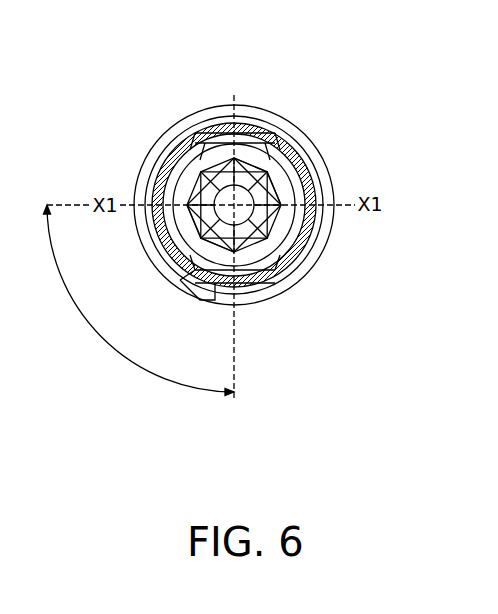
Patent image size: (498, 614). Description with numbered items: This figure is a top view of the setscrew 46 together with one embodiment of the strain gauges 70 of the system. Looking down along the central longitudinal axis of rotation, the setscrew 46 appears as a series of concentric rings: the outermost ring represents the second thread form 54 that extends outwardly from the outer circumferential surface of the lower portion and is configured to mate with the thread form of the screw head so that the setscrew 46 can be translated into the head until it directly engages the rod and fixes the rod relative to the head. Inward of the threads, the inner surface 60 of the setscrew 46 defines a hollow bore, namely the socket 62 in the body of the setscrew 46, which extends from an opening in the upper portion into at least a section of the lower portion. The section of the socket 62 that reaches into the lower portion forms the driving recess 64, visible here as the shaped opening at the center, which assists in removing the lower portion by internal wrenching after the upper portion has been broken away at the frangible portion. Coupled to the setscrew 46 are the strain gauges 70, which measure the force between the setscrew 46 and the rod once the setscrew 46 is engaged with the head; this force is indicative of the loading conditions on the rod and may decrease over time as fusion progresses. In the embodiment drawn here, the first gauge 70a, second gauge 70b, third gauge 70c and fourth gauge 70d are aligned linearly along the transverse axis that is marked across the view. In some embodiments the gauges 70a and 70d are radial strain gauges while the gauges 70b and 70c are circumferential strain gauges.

The setscrew 46 is at (367, 117).
The second thread form 54 is at (170, 157).
The inner surface 60 is at (242, 135).
The socket 62 is at (270, 263).
The driving recess 64 is at (218, 170).
The strain gauges 70 is at (277, 222).
The first gauge 70a is at (205, 238).
The second gauge 70b is at (207, 297).
The third gauge 70c is at (277, 135).
The fourth gauge 70d is at (262, 203).